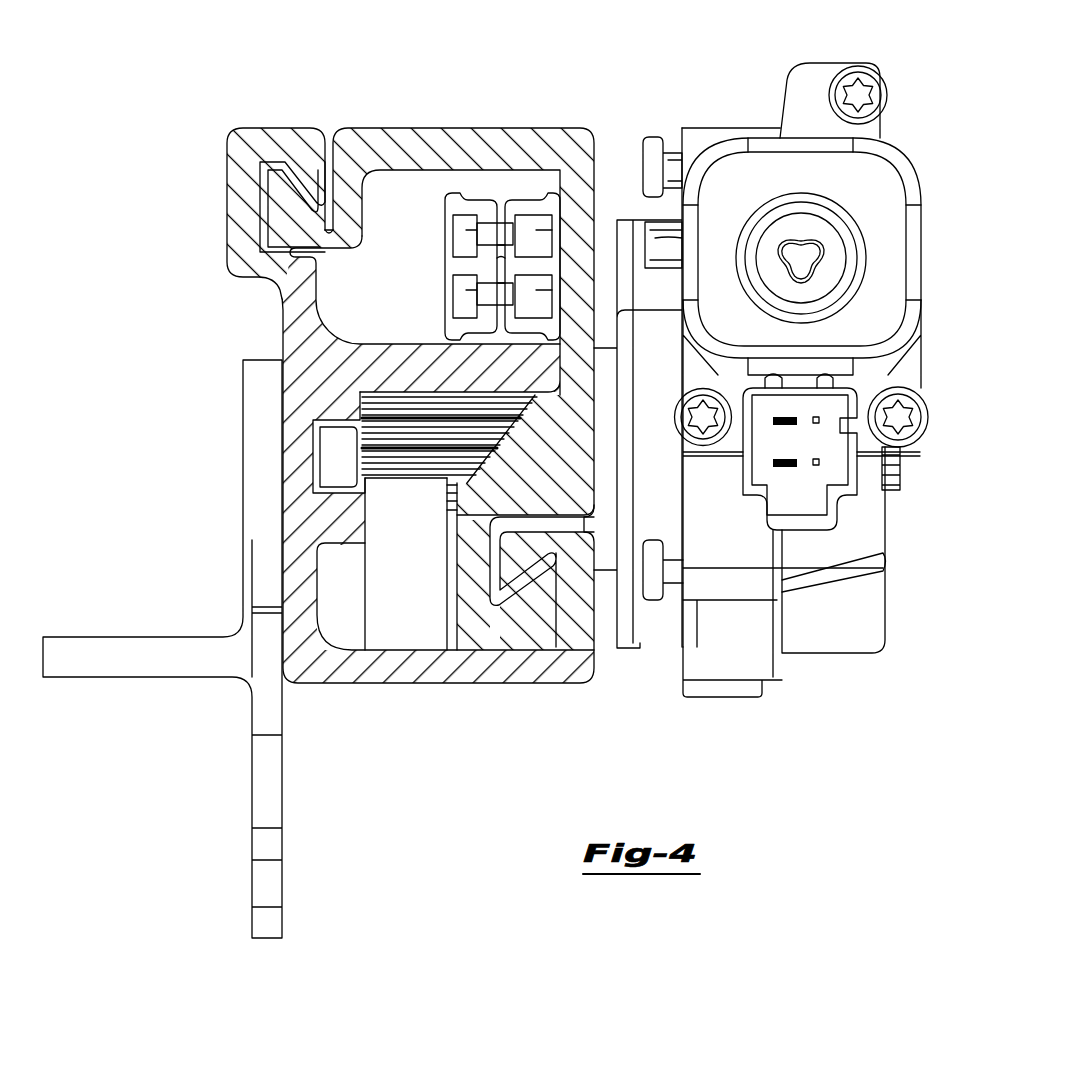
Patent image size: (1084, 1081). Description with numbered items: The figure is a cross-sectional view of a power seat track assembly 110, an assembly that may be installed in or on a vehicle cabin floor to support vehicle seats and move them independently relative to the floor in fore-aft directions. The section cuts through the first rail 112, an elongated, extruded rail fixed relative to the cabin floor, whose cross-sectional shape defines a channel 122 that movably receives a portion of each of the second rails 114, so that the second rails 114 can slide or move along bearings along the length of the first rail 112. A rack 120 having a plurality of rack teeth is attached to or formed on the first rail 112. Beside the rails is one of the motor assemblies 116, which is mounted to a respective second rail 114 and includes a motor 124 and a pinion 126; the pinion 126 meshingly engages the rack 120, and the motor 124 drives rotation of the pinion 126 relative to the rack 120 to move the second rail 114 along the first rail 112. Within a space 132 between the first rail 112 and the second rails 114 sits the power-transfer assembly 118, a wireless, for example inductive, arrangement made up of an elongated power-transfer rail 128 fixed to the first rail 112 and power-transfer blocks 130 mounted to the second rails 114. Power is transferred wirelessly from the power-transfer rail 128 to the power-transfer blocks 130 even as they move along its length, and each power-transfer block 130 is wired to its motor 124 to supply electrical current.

The power seat track assembly 110 is at (275, 72).
The first rail 112 is at (227, 185).
The second rails 114 is at (463, 193).
The motor assemblies 116 is at (921, 164).
The power-transfer assembly 118 is at (529, 186).
The rack 120 is at (383, 515).
The channel 122 is at (318, 612).
The motor 124 is at (733, 175).
The pinion 126 is at (378, 431).
The power-transfer rail 128 is at (400, 212).
The power-transfer blocks 130 is at (548, 205).
The space 132 is at (365, 128).